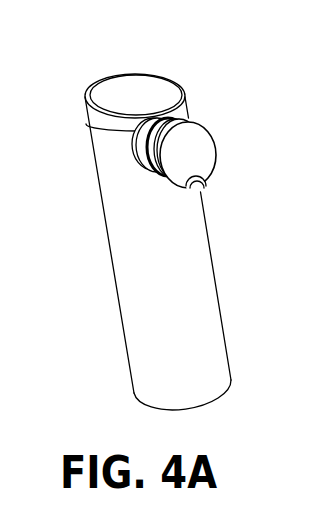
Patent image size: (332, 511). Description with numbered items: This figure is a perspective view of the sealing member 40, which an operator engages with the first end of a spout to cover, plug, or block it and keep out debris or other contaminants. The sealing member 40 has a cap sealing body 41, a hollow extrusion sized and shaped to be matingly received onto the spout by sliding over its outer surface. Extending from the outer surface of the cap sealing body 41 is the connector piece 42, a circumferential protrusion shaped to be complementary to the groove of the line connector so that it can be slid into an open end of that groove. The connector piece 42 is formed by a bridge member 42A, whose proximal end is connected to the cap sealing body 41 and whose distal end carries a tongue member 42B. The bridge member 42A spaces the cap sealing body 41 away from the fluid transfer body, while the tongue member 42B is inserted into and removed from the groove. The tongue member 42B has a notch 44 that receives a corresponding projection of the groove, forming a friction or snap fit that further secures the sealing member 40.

The sealing member 40 is at (151, 231).
The cap sealing body 41 is at (201, 281).
The connector piece 42 is at (154, 137).
The bridge member 42A is at (141, 154).
The tongue member 42B is at (205, 146).
The notch 44 is at (203, 188).